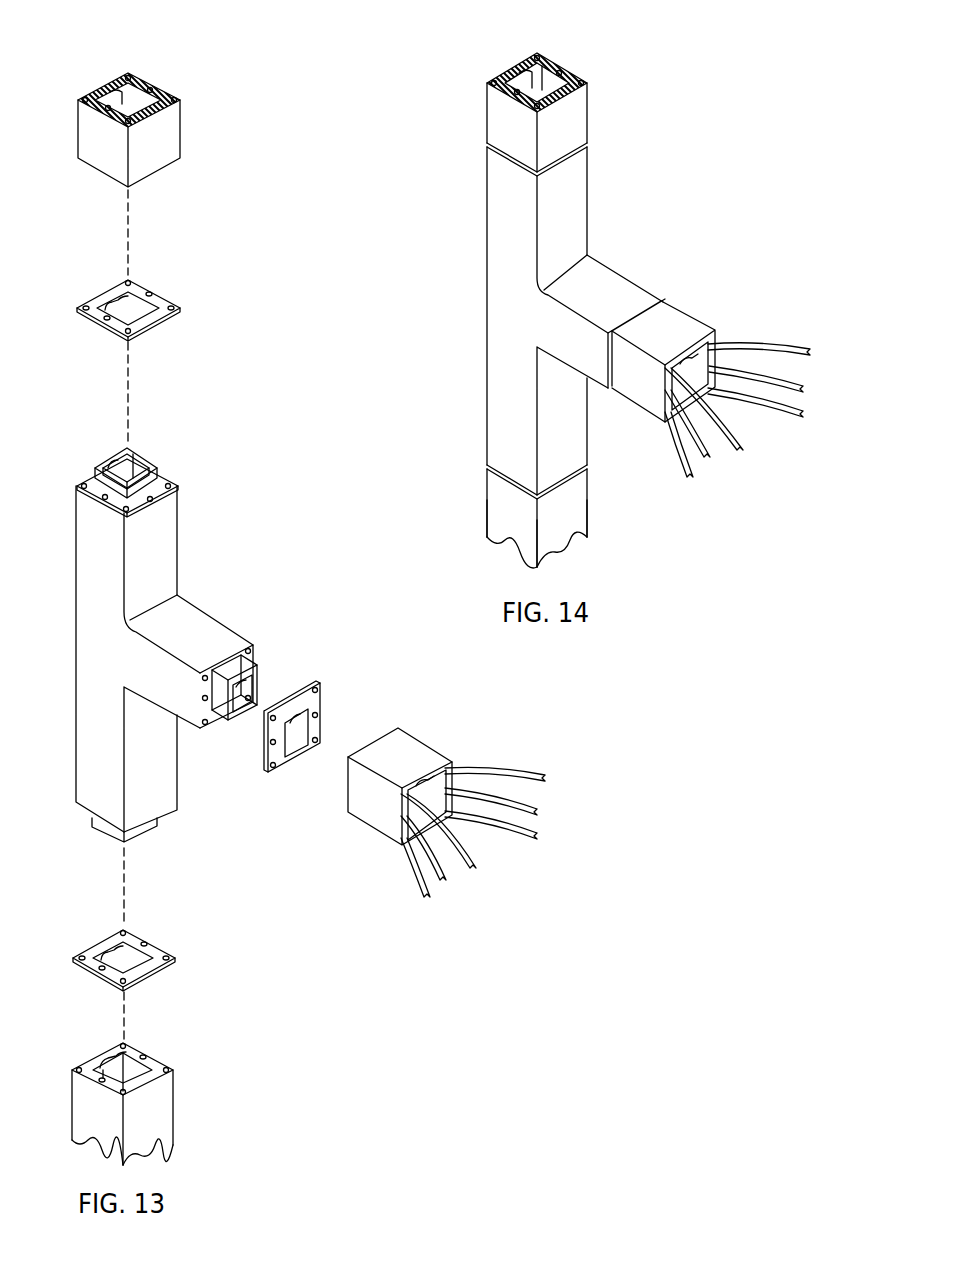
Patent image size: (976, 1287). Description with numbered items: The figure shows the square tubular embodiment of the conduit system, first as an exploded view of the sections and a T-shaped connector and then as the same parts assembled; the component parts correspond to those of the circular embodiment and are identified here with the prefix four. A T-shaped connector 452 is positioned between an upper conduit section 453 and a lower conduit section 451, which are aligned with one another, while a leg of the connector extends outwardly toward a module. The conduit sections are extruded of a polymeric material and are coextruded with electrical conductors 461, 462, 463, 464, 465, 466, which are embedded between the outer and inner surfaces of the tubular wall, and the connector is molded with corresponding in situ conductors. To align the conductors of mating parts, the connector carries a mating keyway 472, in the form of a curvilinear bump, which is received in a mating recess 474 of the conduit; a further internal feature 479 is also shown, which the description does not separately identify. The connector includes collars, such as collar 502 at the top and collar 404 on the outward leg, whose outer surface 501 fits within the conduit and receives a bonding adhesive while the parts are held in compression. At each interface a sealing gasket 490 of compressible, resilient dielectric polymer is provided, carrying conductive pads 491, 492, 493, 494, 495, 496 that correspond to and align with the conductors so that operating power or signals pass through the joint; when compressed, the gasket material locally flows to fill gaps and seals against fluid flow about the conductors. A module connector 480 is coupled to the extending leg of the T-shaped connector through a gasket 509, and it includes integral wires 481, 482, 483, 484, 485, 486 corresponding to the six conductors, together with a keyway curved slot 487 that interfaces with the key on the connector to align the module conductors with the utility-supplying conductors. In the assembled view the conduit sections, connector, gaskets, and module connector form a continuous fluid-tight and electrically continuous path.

In FIG. 13, the collar 404 is at (258, 680).
In FIG. 13, the conduit section 451 is at (165, 1100).
In FIG. 14, the conduit section 451 is at (575, 525).
In FIG. 13, the T-shaped connector 452 is at (198, 615).
In FIG. 14, the T-shaped connector 452 is at (590, 223).
In FIG. 13, the conduit section 453 is at (170, 140).
In FIG. 14, the conduit section 453 is at (570, 133).
In FIG. 13, the electrical conductor 461 is at (131, 75).
In FIG. 14, the electrical conductor 461 is at (540, 52).
In FIG. 13, the electrical conductor 462 is at (152, 92).
In FIG. 14, the electrical conductor 462 is at (562, 75).
In FIG. 13, the electrical conductor 463 is at (182, 100).
In FIG. 14, the electrical conductor 463 is at (590, 83).
In FIG. 13, the electrical conductor 464 is at (110, 115).
In FIG. 14, the electrical conductor 464 is at (520, 105).
In FIG. 13, the electrical conductor 465 is at (90, 103).
In FIG. 14, the electrical conductor 465 is at (500, 90).
In FIG. 13, the electrical conductor 466 is at (84, 97).
In FIG. 14, the electrical conductor 466 is at (490, 83).
In FIG. 13, the mating keyway 472 is at (200, 559).
In FIG. 13, the mating recess 474 is at (116, 94).
In FIG. 14, the mating recess 474 is at (525, 70).
In FIG. 13, the internal channel 479 is at (133, 452).
In FIG. 14, the internal channel 479 is at (548, 75).
In FIG. 13, the connector 480 is at (394, 790).
In FIG. 14, the connector 480 is at (669, 362).
In FIG. 13, the wire 481 is at (510, 765).
In FIG. 14, the wire 481 is at (759, 349).
In FIG. 13, the wire 482 is at (540, 808).
In FIG. 14, the wire 482 is at (808, 388).
In FIG. 13, the wire 483 is at (522, 840).
In FIG. 14, the wire 483 is at (790, 413).
In FIG. 13, the wire 484 is at (425, 893).
In FIG. 14, the wire 484 is at (690, 478).
In FIG. 13, the wire 485 is at (441, 892).
In FIG. 14, the wire 485 is at (712, 462).
In FIG. 13, the wire 486 is at (478, 866).
In FIG. 14, the wire 486 is at (745, 448).
In FIG. 13, the keyway curved slot 487 is at (435, 765).
In FIG. 14, the keyway curved slot 487 is at (705, 342).
In FIG. 13, the sealing gasket 490 is at (115, 290).
In FIG. 14, the sealing gasket 490 is at (550, 175).
In FIG. 13, the conductive pad 491 is at (131, 281).
In FIG. 13, the conductive pad 492 is at (152, 295).
In FIG. 13, the conductive pad 493 is at (175, 308).
In FIG. 13, the conductive pad 494 is at (125, 333).
In FIG. 13, the conductive pad 495 is at (102, 318).
In FIG. 13, the conductive pad 496 is at (84, 305).
In FIG. 13, the outer surface of collar 501 is at (138, 490).
In FIG. 13, the collar 502 is at (145, 456).
In FIG. 13, the gasket 509 is at (300, 688).
In FIG. 14, the gasket 509 is at (637, 305).